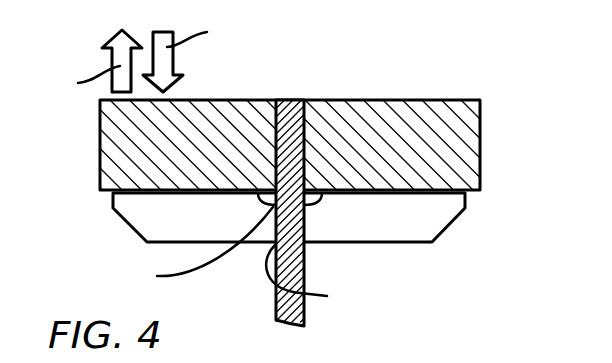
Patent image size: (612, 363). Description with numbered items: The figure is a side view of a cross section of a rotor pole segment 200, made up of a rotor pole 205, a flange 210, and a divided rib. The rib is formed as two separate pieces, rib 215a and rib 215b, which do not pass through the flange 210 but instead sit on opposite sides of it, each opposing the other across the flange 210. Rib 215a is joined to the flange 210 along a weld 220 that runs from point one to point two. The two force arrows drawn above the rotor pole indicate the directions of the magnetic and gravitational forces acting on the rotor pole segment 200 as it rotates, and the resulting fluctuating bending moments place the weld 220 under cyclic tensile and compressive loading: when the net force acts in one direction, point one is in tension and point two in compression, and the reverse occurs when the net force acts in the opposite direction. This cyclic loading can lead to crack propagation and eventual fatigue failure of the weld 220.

The rotor pole segment 200 is at (280, 175).
The rotor pole 205 is at (110, 142).
The flange 210 is at (290, 100).
The rib 215a is at (143, 217).
The rib 215b is at (437, 213).
The weld 220 is at (273, 222).